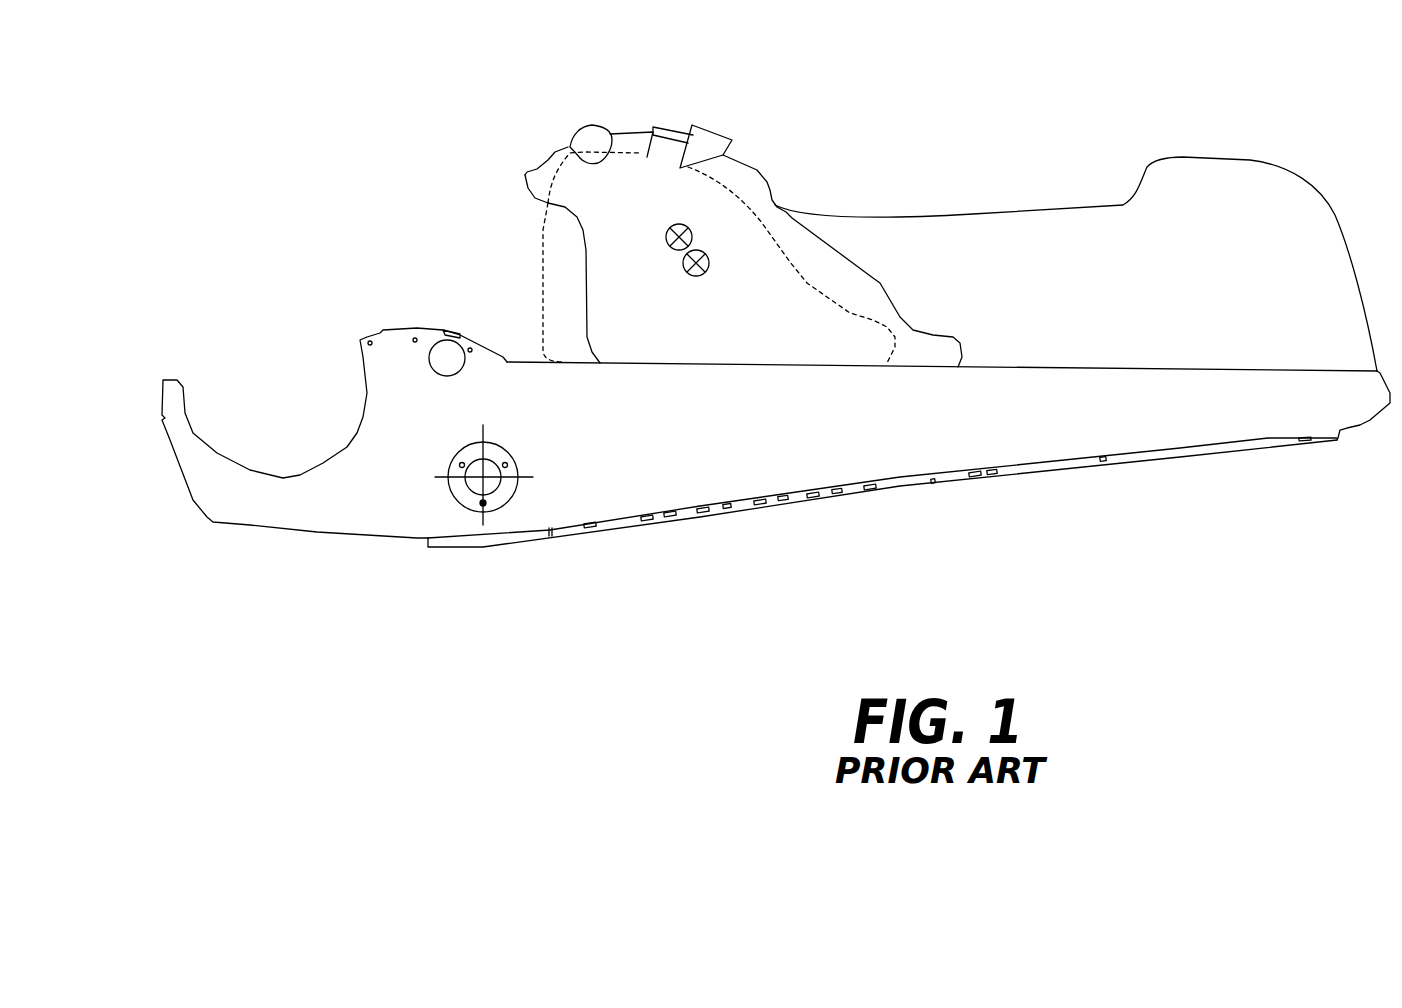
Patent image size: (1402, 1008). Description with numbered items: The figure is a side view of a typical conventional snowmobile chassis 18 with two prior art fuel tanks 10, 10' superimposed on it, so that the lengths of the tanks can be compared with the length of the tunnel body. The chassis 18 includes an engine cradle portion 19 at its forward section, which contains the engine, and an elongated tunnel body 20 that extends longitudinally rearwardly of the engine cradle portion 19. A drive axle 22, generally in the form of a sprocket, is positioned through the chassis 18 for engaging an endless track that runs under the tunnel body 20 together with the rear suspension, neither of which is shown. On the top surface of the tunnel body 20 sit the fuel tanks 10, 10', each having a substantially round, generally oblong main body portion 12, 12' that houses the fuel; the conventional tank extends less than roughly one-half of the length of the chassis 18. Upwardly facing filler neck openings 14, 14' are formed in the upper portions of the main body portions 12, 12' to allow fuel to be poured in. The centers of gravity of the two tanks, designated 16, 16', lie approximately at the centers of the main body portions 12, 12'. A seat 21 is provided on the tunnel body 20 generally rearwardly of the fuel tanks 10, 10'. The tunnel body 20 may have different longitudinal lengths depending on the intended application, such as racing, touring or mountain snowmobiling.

The fuel tank 10 is at (743, 246).
The fuel tank 10' is at (719, 257).
The main body portion 12 is at (796, 156).
The main body portion 12' is at (886, 245).
The filler neck opening 14 is at (662, 101).
The filler neck opening 14' is at (742, 124).
The center of gravity 16 is at (718, 286).
The center of gravity 16' is at (643, 222).
The chassis 18 is at (665, 560).
The engine cradle portion 19 is at (257, 435).
The tunnel body 20 is at (915, 424).
The seat 21 is at (1246, 233).
The drive axle 22 is at (493, 468).